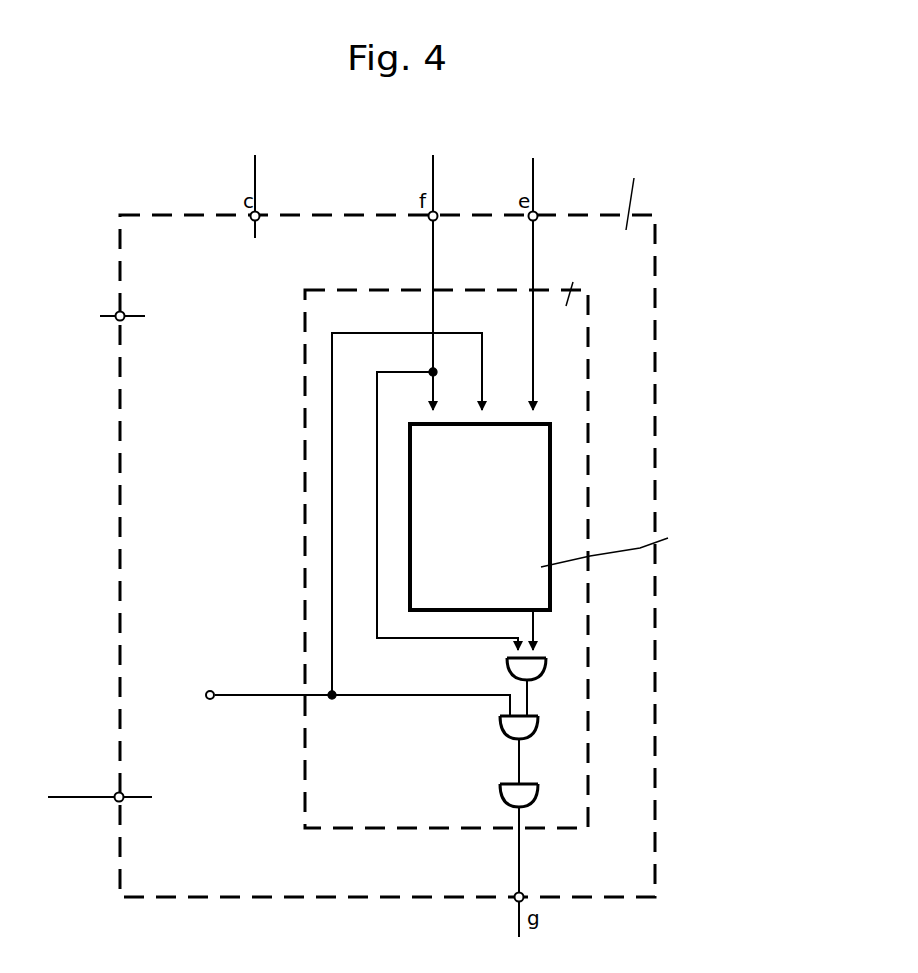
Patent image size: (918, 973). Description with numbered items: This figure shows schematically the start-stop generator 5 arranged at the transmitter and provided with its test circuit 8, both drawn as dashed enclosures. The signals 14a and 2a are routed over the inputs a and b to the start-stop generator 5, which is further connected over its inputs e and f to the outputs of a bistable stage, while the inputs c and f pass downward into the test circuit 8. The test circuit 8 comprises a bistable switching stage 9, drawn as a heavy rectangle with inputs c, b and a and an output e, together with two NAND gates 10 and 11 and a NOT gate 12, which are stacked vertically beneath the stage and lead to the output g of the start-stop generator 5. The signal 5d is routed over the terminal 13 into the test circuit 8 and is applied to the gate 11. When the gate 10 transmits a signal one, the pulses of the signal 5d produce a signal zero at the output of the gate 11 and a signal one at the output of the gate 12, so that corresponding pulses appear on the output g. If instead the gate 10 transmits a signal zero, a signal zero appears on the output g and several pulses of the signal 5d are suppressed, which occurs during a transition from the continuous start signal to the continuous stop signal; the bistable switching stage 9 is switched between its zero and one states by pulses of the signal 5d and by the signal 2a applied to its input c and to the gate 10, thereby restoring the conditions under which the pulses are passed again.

The start-stop generator 5 is at (409, 517).
The test circuit 8 is at (345, 296).
The bistable switching stage 9 is at (548, 520).
The NAND gate 10 is at (553, 656).
The NAND gate 11 is at (546, 713).
The NOT gate 12 is at (546, 781).
The terminal 13 is at (346, 699).
The signal 2a is at (112, 295).
The signal 14a is at (112, 774).
The signal 5d is at (300, 673).